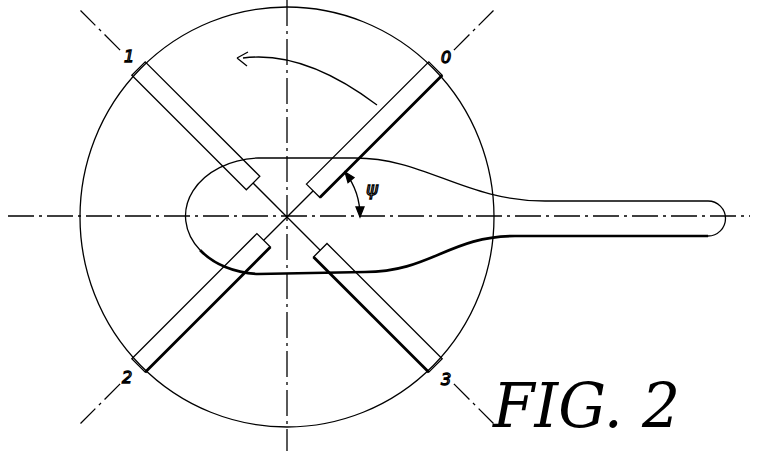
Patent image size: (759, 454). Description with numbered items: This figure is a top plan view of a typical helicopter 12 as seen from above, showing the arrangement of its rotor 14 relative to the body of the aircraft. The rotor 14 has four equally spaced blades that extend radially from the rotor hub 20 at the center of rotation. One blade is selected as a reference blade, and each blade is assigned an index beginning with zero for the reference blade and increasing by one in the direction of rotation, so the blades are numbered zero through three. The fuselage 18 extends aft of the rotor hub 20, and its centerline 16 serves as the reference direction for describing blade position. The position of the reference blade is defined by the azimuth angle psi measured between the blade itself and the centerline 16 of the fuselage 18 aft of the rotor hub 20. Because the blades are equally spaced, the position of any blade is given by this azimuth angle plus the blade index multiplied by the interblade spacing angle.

The helicopter 12 is at (505, 171).
The rotor 14 is at (401, 355).
The centerline of the fuselage 16 is at (37, 214).
The fuselage 18 is at (523, 238).
The rotor hub 20 is at (284, 219).